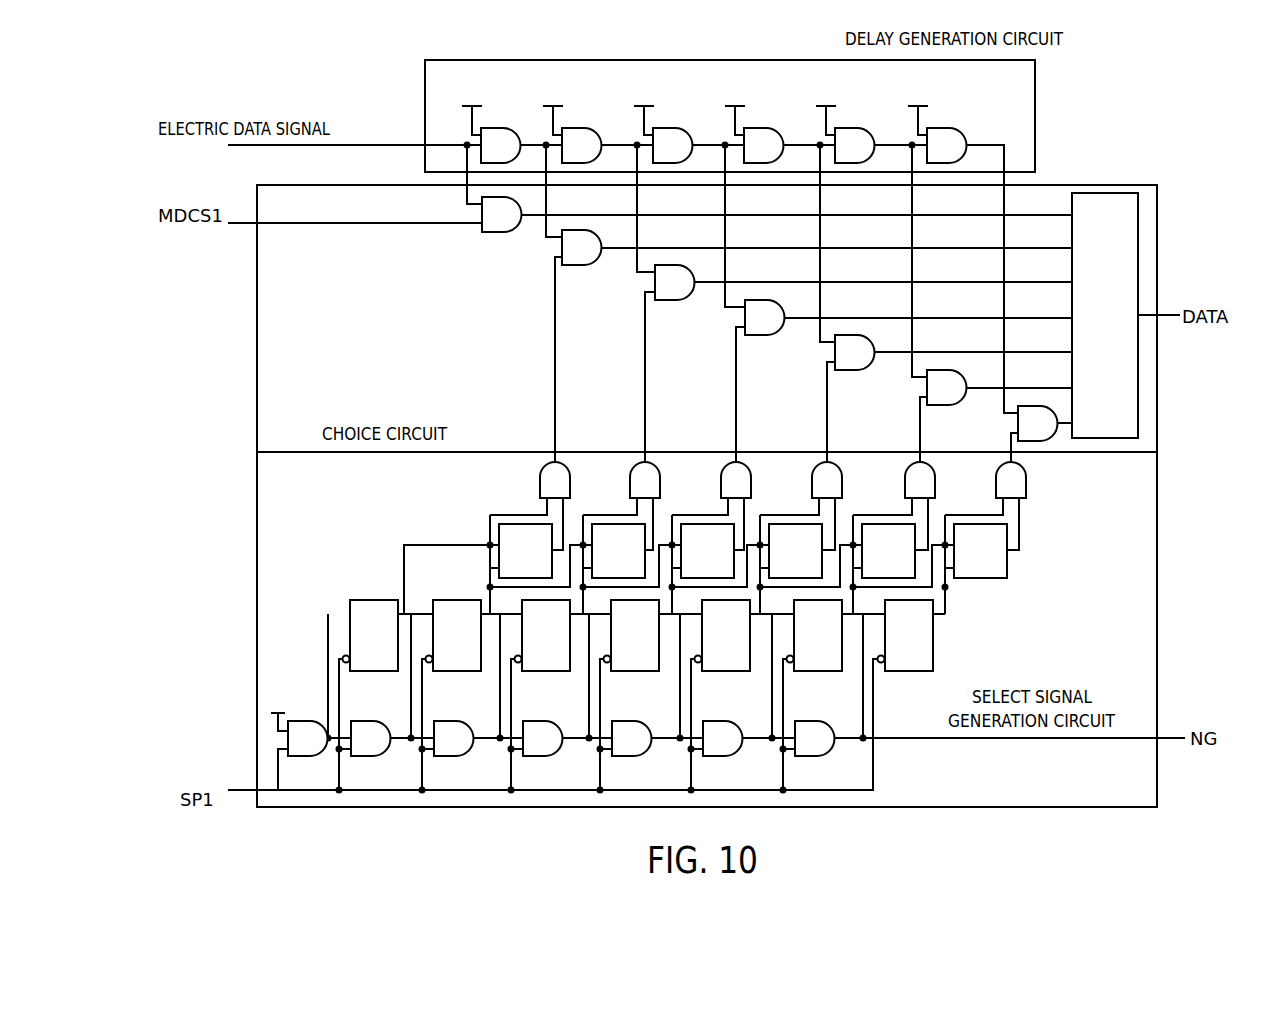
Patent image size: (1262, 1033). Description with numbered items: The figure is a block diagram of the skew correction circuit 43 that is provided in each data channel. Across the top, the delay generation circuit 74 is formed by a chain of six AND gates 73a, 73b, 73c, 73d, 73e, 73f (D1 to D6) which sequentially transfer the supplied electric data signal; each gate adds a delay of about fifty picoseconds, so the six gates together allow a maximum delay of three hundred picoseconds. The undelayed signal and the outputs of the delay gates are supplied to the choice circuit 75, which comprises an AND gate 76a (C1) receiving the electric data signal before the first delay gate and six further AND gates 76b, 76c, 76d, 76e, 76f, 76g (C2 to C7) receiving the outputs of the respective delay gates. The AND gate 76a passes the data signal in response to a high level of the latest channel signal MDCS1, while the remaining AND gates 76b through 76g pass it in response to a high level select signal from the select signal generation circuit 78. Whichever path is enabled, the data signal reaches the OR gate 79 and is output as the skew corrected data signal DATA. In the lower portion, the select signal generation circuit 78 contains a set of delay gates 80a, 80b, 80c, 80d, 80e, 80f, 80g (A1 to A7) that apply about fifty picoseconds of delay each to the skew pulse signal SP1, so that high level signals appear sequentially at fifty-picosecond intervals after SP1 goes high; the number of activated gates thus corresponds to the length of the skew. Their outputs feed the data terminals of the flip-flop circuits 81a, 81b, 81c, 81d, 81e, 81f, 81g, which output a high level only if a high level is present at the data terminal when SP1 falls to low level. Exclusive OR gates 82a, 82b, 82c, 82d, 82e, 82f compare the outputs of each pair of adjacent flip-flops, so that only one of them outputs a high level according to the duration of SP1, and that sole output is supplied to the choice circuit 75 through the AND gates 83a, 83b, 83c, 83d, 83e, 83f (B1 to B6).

The skew correction circuit 43 is at (405, 113).
The AND gate D1 73a is at (510, 128).
The AND gate D2 73b is at (591, 128).
The AND gate D3 73c is at (683, 128).
The AND gate D4 73d is at (773, 128).
The AND gate D5 73e is at (859, 128).
The AND gate D6 73f is at (954, 130).
The delay generation circuit 74 is at (783, 60).
The choice circuit 75 is at (1157, 200).
The AND gate C1 76a is at (502, 232).
The AND gate C2 76b is at (582, 265).
The AND gate C3 76c is at (675, 300).
The AND gate C4 76d is at (765, 335).
The AND gate C5 76e is at (855, 370).
The AND gate C6 76f is at (955, 405).
The AND gate C7 76g is at (1042, 441).
The select signal generation circuit 78 is at (1157, 558).
The OR gate 79 is at (1072, 262).
The delay gate A1 80a is at (310, 756).
The delay gate A2 80b is at (373, 756).
The delay gate A3 80c is at (456, 756).
The delay gate A4 80d is at (545, 756).
The delay gate A5 80e is at (634, 756).
The delay gate A6 80f is at (725, 756).
The delay gate A7 80g is at (817, 756).
The first flip-flop circuit 81a is at (380, 671).
The second flip-flop circuit 81b is at (463, 671).
The third flip-flop circuit 81c is at (552, 671).
The fourth flip-flop circuit 81d is at (641, 671).
The fifth flip-flop circuit 81e is at (732, 671).
The sixth flip-flop circuit 81f is at (824, 671).
The seventh flip-flop circuit 81g is at (912, 671).
The first exclusive OR gate 82a is at (522, 524).
The second exclusive OR gate 82b is at (616, 524).
The third exclusive OR gate 82c is at (706, 524).
The fourth exclusive OR gate 82d is at (794, 524).
The fifth exclusive OR gate 82e is at (888, 524).
The sixth exclusive OR gate 82f is at (978, 524).
The AND gate B1 83a is at (548, 462).
The AND gate B2 83b is at (639, 462).
The AND gate B3 83c is at (728, 462).
The AND gate B4 83d is at (819, 462).
The AND gate B5 83e is at (910, 462).
The AND gate B6 83f is at (1027, 470).